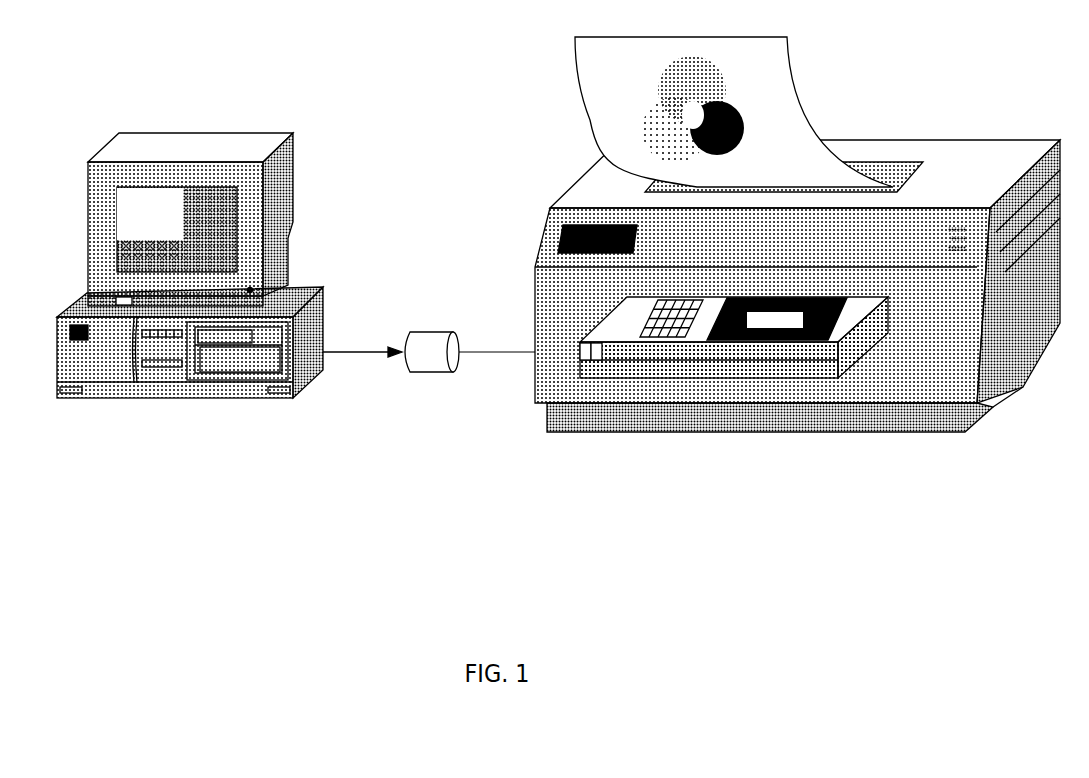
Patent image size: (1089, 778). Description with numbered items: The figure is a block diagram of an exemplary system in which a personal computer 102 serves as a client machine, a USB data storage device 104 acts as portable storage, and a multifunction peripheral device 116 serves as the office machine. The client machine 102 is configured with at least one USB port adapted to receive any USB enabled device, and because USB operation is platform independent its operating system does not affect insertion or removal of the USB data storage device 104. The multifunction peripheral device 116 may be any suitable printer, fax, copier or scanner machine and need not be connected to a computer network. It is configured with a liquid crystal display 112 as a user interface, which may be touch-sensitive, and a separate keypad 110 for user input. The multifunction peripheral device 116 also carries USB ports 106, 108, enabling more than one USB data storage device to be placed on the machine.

The personal computer 102 is at (220, 133).
The USB data storage device 104 is at (427, 333).
The USB port 106 is at (583, 361).
The USB port 108 is at (600, 361).
The keypad 110 is at (672, 300).
The liquid crystal display 112 is at (820, 298).
The multifunction peripheral device 116 is at (940, 140).